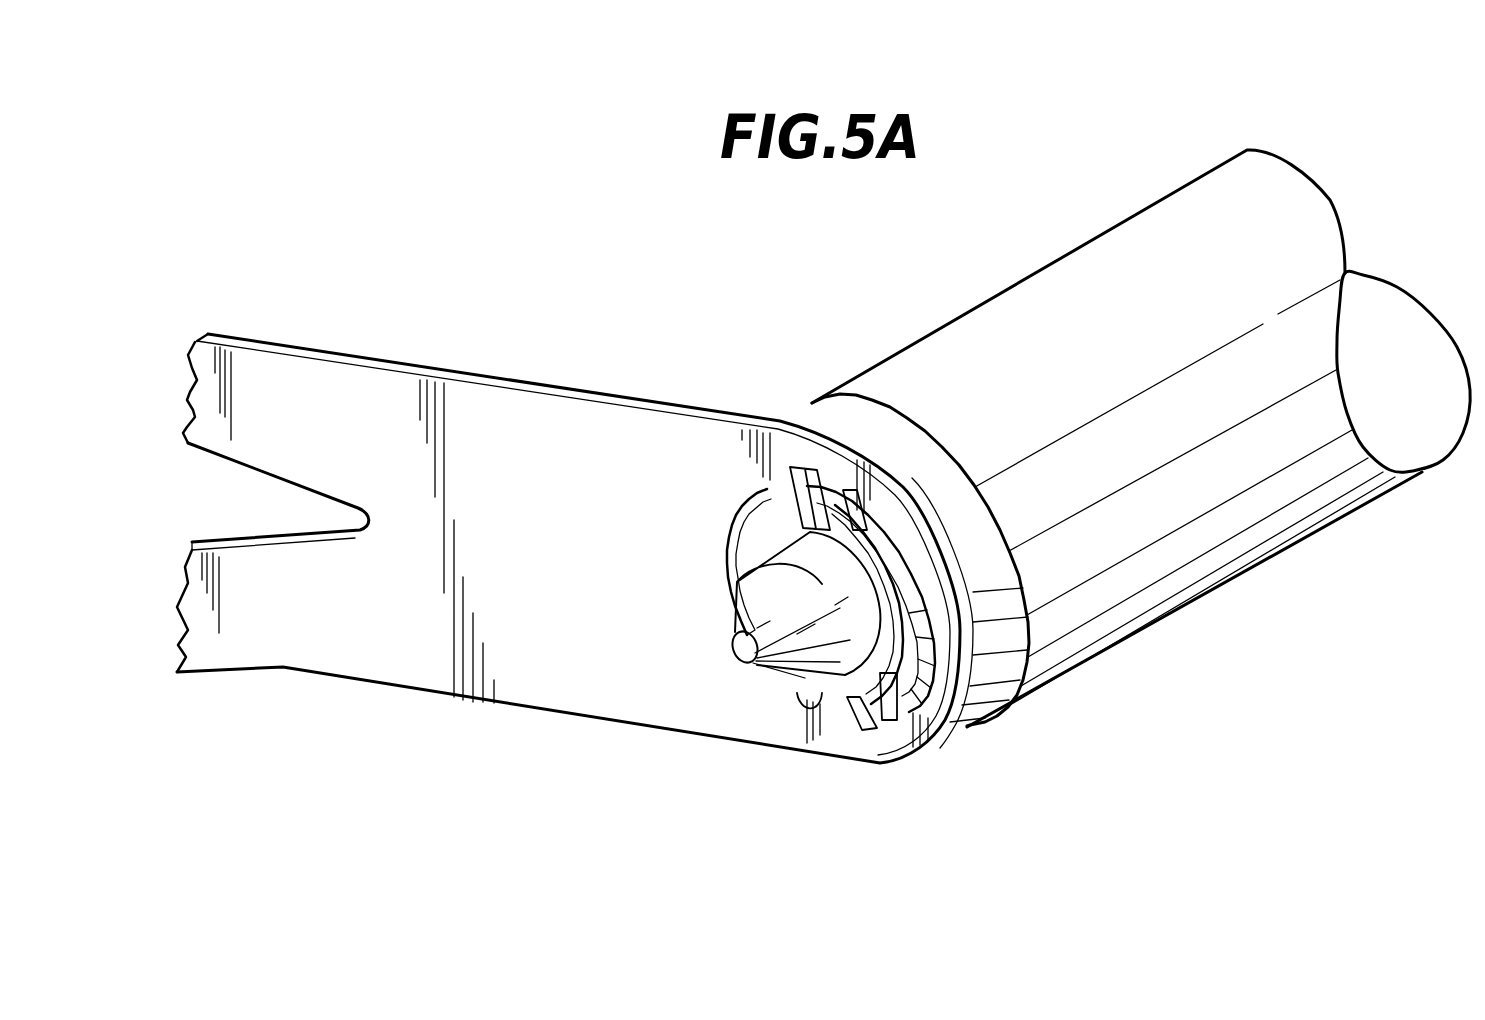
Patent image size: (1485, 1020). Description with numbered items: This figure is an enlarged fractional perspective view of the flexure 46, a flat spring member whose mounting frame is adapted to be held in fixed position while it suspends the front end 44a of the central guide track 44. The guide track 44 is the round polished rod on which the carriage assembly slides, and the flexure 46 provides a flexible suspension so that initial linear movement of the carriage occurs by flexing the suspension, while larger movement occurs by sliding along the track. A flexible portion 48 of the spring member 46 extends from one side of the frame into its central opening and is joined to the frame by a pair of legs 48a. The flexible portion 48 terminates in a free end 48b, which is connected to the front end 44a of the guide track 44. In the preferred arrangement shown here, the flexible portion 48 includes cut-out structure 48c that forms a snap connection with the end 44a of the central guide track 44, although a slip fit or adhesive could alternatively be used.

The central guide track 44 is at (1160, 565).
The front end of the central guide track 44a is at (740, 577).
The flexure 46 is at (433, 765).
The flexible portion 48 is at (471, 430).
The legs 48a is at (272, 378).
The free end 48b is at (690, 473).
The cut-out structure 48c is at (910, 707).